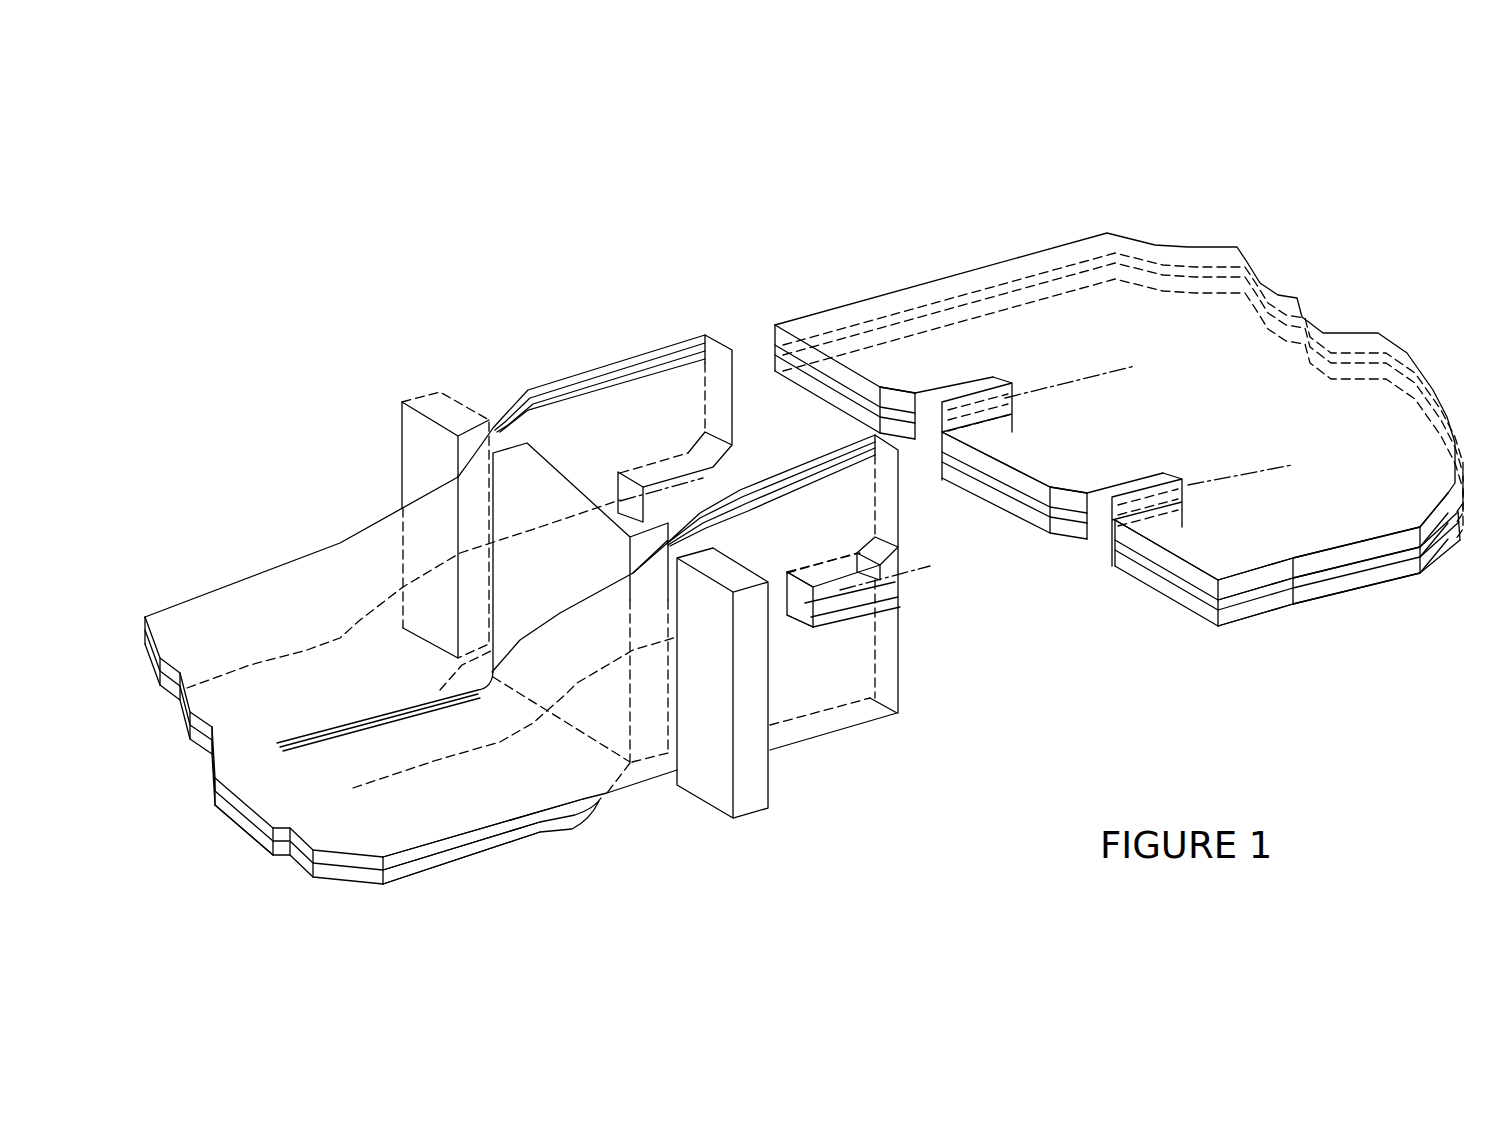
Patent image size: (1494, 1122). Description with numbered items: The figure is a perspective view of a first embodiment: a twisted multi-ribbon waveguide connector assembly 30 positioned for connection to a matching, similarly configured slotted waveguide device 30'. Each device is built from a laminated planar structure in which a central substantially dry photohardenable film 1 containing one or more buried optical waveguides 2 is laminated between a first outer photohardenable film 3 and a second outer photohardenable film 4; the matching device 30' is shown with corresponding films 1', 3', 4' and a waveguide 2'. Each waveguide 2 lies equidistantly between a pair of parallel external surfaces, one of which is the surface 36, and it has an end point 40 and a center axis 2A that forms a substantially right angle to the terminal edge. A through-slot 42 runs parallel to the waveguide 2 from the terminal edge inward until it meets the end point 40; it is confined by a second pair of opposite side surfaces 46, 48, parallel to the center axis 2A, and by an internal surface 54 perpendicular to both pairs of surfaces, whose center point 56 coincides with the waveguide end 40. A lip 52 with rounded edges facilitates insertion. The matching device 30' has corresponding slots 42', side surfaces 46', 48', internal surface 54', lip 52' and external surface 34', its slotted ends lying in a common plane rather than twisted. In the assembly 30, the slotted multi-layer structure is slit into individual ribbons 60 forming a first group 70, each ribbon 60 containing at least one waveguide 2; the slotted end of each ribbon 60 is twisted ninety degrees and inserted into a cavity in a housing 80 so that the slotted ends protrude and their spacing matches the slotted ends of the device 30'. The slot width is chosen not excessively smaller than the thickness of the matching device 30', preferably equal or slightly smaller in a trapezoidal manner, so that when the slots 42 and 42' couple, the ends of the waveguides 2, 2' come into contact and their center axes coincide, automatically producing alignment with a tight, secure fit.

The twisted multi-ribbon waveguide connector assembly 30 is at (521, 563).
The slotted waveguide device 30' is at (1119, 371).
The central photohardenable film 1 is at (461, 867).
The substrate layer 1' is at (1319, 596).
The waveguide 2 is at (432, 644).
The waveguide 2' is at (1180, 426).
The center axis 2A is at (703, 480).
The first outer photohardenable film 3 is at (461, 879).
The base layer 3' is at (1319, 613).
The second outer photohardenable film 4 is at (483, 846).
The cover layer 4' is at (1319, 576).
The top surface 34' is at (1196, 547).
The external surface 36 is at (1405, 567).
The end-point 40 is at (800, 600).
The through-slot 42 is at (882, 670).
The slot 42' is at (1013, 567).
The side surface 46 is at (852, 633).
The contact strip 46' is at (1063, 454).
The side surface 48 is at (821, 555).
The contact pad 48' is at (1065, 443).
The lip 52 is at (847, 530).
The contact block 52' is at (995, 421).
The internal surface 54 is at (849, 635).
The contact 54' is at (1098, 439).
The center point 56 is at (787, 600).
The ribbon 60 is at (606, 845).
The first group of ribbons 70 is at (410, 396).
The housing 80 is at (477, 398).